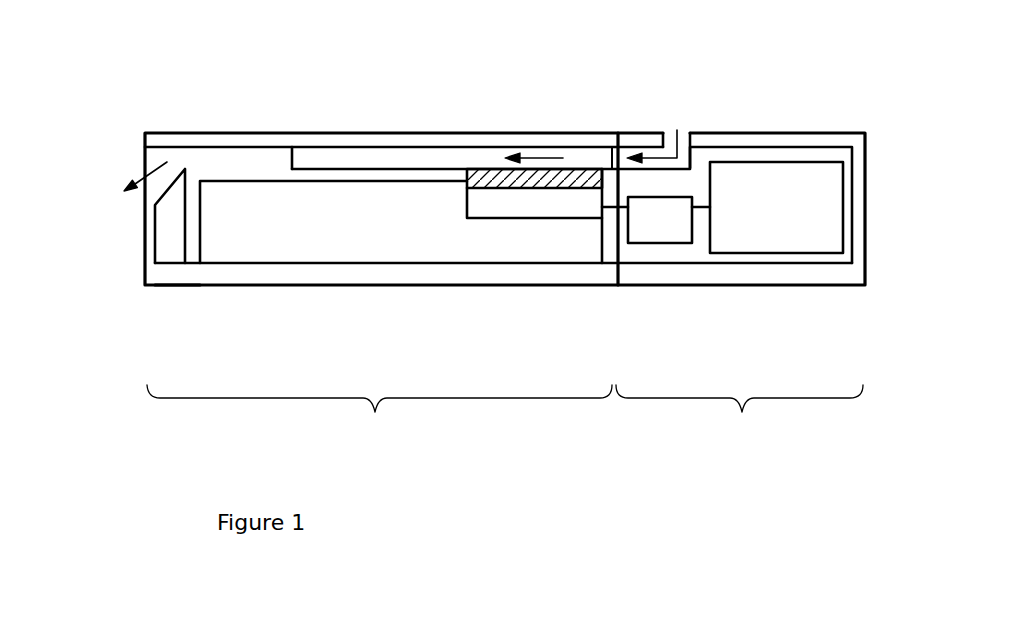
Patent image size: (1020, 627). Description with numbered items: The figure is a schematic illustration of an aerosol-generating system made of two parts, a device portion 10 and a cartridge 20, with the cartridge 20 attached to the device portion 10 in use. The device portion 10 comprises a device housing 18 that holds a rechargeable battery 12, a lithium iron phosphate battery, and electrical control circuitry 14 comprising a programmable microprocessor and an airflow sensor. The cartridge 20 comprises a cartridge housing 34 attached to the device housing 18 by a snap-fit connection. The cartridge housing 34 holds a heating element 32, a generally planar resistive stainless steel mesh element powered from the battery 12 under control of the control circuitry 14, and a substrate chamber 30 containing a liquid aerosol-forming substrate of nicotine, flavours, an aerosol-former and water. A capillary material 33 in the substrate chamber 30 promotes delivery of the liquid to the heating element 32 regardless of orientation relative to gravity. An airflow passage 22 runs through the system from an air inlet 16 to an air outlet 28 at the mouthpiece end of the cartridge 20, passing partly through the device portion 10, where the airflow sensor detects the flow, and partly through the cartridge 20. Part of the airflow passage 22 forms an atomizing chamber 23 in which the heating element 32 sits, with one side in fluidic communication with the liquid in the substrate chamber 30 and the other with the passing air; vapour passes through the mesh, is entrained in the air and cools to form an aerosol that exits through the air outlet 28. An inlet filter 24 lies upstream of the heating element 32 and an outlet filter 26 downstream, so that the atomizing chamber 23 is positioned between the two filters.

The device portion 10 is at (739, 296).
The rechargeable battery 12 is at (787, 197).
The electrical control circuitry 14 is at (668, 217).
The air inlet 16 is at (683, 130).
The device housing 18 is at (822, 274).
The cartridge 20 is at (379, 415).
The airflow passage 22 is at (225, 162).
The atomizing chamber 23 is at (473, 158).
The inlet filter 24 is at (635, 151).
The outlet filter 26 is at (288, 157).
The air outlet 28 is at (146, 160).
The substrate chamber 30 is at (365, 217).
The heating element 32 is at (543, 178).
The capillary material 33 is at (580, 202).
The cartridge housing 34 is at (507, 140).